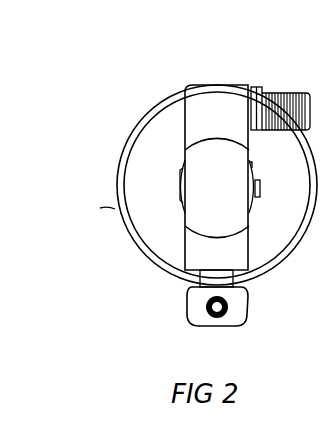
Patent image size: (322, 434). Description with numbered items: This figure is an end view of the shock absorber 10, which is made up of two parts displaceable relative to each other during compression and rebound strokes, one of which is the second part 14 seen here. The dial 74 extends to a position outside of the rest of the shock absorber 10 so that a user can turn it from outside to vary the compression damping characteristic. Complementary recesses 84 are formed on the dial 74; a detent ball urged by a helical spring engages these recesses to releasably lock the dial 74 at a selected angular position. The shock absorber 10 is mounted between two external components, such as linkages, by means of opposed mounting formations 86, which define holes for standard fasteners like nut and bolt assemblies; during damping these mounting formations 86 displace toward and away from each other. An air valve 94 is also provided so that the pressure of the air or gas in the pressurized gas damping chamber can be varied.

The shock absorber 10 is at (153, 91).
The second part 14 is at (257, 294).
The dial 74 is at (253, 198).
The complementary recesses 84 is at (179, 171).
The mounting formations 86 is at (177, 137).
The air valve 94 is at (294, 125).